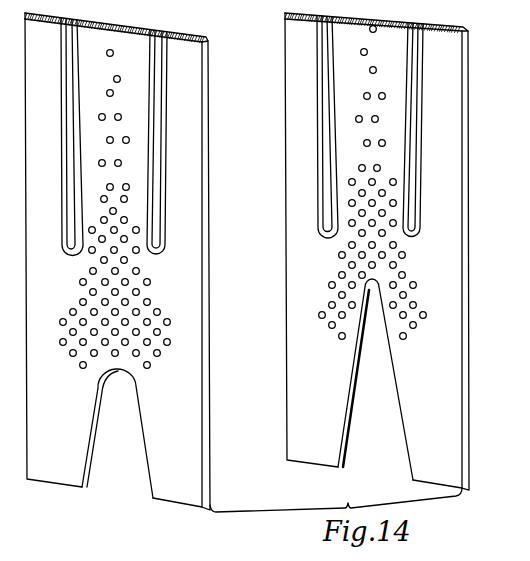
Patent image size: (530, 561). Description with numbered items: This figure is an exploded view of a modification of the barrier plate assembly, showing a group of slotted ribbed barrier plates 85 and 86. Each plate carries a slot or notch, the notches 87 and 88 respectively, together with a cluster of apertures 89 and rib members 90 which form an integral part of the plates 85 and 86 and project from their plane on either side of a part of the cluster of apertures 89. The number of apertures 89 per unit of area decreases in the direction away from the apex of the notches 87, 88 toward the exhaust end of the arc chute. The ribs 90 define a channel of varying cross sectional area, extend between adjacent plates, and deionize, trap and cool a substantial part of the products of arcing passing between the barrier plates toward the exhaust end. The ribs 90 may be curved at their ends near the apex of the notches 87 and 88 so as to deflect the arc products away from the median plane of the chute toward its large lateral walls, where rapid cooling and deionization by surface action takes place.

The slotted ribbed barrier plate 85 is at (195, 39).
The slotted ribbed barrier plate 86 is at (454, 50).
The slot or notch 87 is at (135, 419).
The slot or notch 88 is at (393, 402).
The apertures 89 is at (150, 300).
The rib members 90 is at (67, 89).